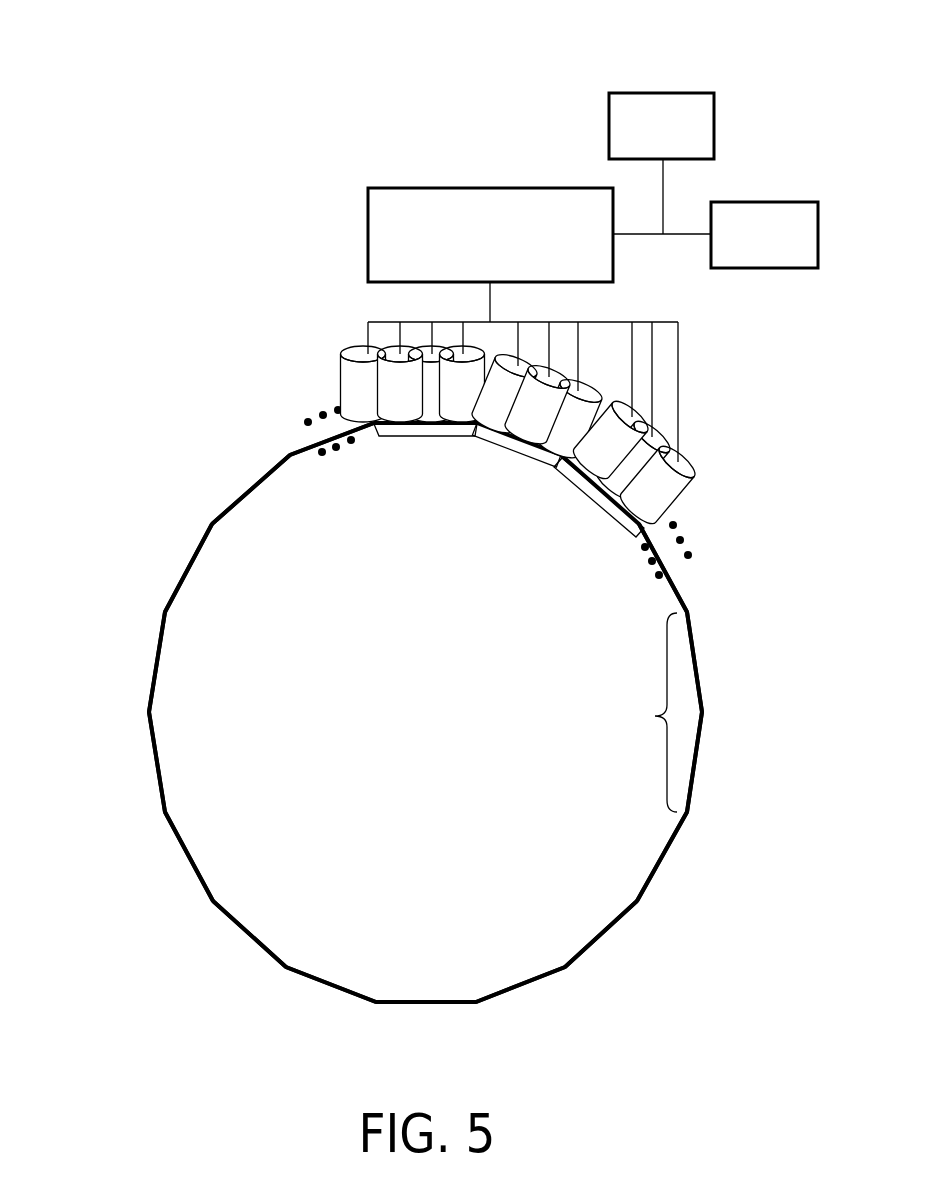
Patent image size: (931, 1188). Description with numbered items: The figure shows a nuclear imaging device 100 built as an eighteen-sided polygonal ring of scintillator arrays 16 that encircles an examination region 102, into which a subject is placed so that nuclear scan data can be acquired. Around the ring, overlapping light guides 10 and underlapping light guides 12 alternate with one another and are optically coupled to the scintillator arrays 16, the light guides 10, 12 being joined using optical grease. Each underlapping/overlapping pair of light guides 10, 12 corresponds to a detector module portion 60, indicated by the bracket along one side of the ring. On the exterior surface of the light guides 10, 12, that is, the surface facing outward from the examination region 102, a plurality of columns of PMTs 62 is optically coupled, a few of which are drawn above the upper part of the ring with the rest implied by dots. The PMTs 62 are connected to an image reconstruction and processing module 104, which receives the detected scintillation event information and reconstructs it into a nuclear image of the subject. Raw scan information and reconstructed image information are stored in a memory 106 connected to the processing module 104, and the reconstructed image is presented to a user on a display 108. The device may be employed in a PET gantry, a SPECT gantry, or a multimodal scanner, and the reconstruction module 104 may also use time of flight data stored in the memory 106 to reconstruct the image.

The overlapping light guide 10 is at (250, 490).
The underlapping light guide 12 is at (300, 446).
The scintillator array 16 is at (427, 437).
The detector module portion 60 is at (651, 712).
The PMT 62 is at (345, 369).
The nuclear imaging device 100 is at (138, 354).
The examination region 102 is at (409, 725).
The image reconstruction and processing module 104 is at (490, 188).
The memory 106 is at (663, 93).
The display 108 is at (762, 202).